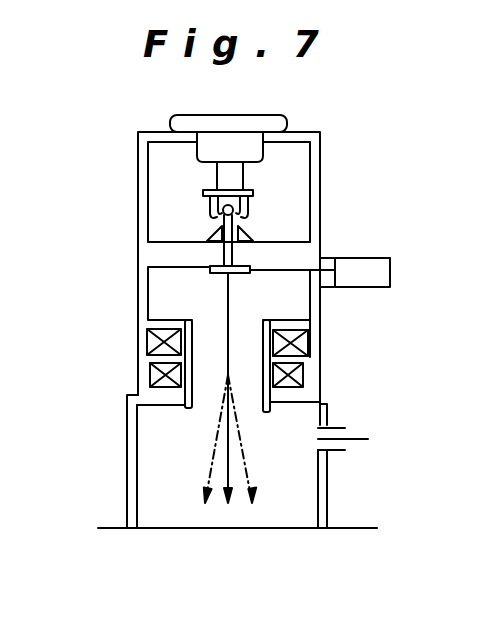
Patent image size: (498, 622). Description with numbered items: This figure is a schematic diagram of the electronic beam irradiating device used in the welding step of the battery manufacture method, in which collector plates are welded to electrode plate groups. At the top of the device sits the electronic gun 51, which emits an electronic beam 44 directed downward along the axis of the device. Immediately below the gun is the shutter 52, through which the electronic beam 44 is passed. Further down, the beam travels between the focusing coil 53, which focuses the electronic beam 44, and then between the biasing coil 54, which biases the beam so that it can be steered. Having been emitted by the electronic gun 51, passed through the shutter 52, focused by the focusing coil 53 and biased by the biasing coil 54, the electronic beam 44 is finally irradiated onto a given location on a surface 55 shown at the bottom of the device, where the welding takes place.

The electronic beam 44 is at (228, 350).
The electronic gun 51 is at (210, 216).
The shutter 52 is at (210, 271).
The focusing coil 53 is at (148, 338).
The biasing coil 54 is at (150, 368).
The surface 55 is at (203, 525).